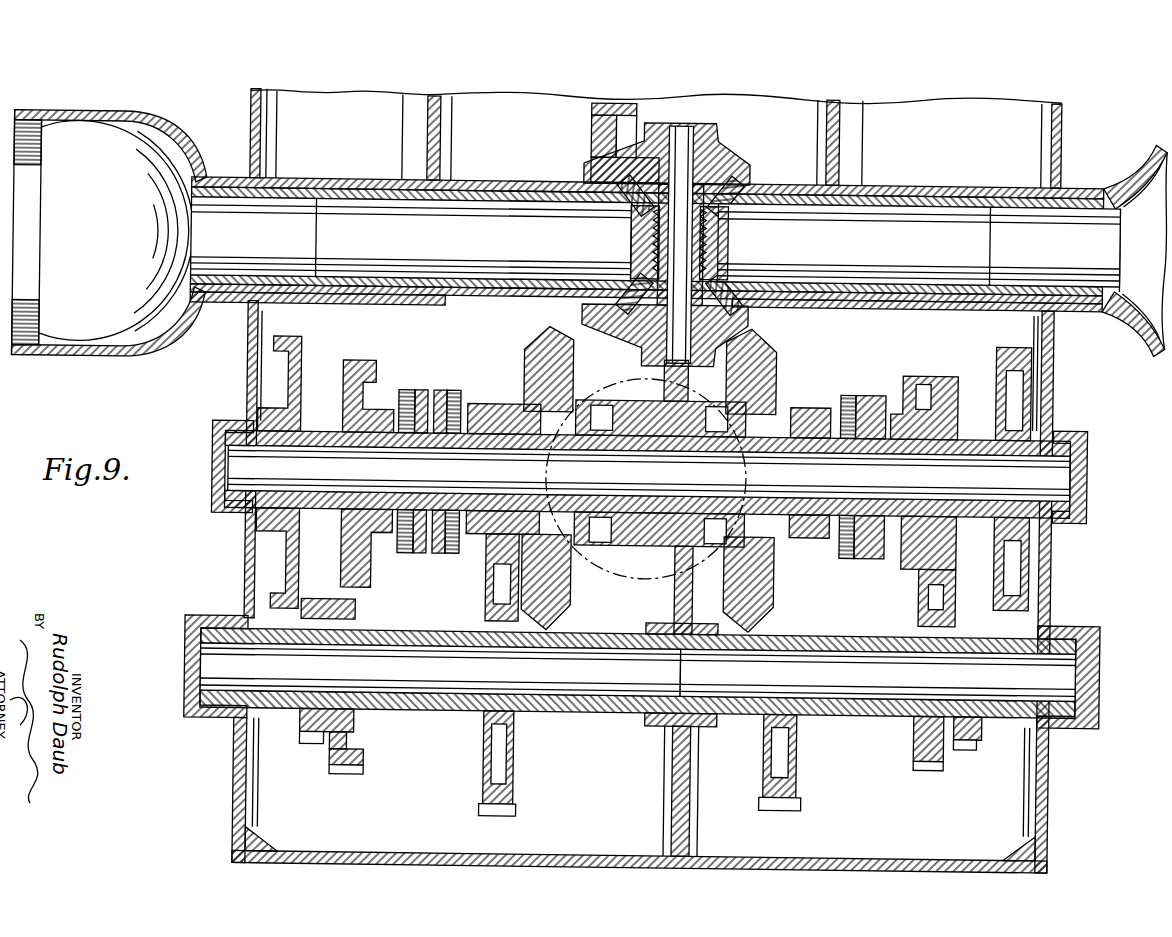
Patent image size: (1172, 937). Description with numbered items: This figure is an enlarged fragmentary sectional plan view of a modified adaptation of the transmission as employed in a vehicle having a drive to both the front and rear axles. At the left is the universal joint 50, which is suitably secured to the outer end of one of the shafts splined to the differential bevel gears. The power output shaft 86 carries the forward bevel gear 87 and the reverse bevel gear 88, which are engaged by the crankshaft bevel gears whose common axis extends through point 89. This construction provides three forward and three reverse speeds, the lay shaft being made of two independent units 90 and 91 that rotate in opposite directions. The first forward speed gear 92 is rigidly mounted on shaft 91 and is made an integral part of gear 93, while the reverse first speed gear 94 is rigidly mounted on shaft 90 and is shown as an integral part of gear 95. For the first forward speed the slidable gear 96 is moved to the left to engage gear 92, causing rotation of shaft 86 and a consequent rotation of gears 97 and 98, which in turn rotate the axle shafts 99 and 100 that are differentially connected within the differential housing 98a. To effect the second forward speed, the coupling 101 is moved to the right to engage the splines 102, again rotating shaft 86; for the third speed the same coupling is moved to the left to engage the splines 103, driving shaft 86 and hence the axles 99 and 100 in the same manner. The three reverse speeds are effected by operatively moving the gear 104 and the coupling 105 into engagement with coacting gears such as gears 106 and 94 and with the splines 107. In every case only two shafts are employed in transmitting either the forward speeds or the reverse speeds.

The universal joint 50 is at (109, 234).
The power output shaft 86 is at (1060, 472).
The forward bevel gear 87 is at (750, 360).
The reverse bevel gear 88 is at (530, 350).
The point on common axis of crankshaft bevel gears 89 is at (648, 474).
The lay shaft unit 90 is at (570, 688).
The lay shaft unit 91 is at (860, 690).
The first forward speed gear 92 is at (972, 742).
The gear 93 is at (917, 765).
The reverse first speed gear 94 is at (314, 742).
The gear 95 is at (368, 757).
The slidable gear 96 is at (1000, 342).
The gear 97 is at (612, 412).
The gear 98 is at (596, 137).
The differential housing 98a is at (717, 158).
The axle shaft 99 is at (425, 239).
The axle shaft 100 is at (910, 245).
The coupling 101 is at (883, 386).
The splines 102 is at (908, 404).
The splines 103 is at (822, 400).
The gear 104 is at (300, 345).
The coupling 105 is at (410, 386).
The gear 106 is at (368, 365).
The splines 107 is at (456, 396).